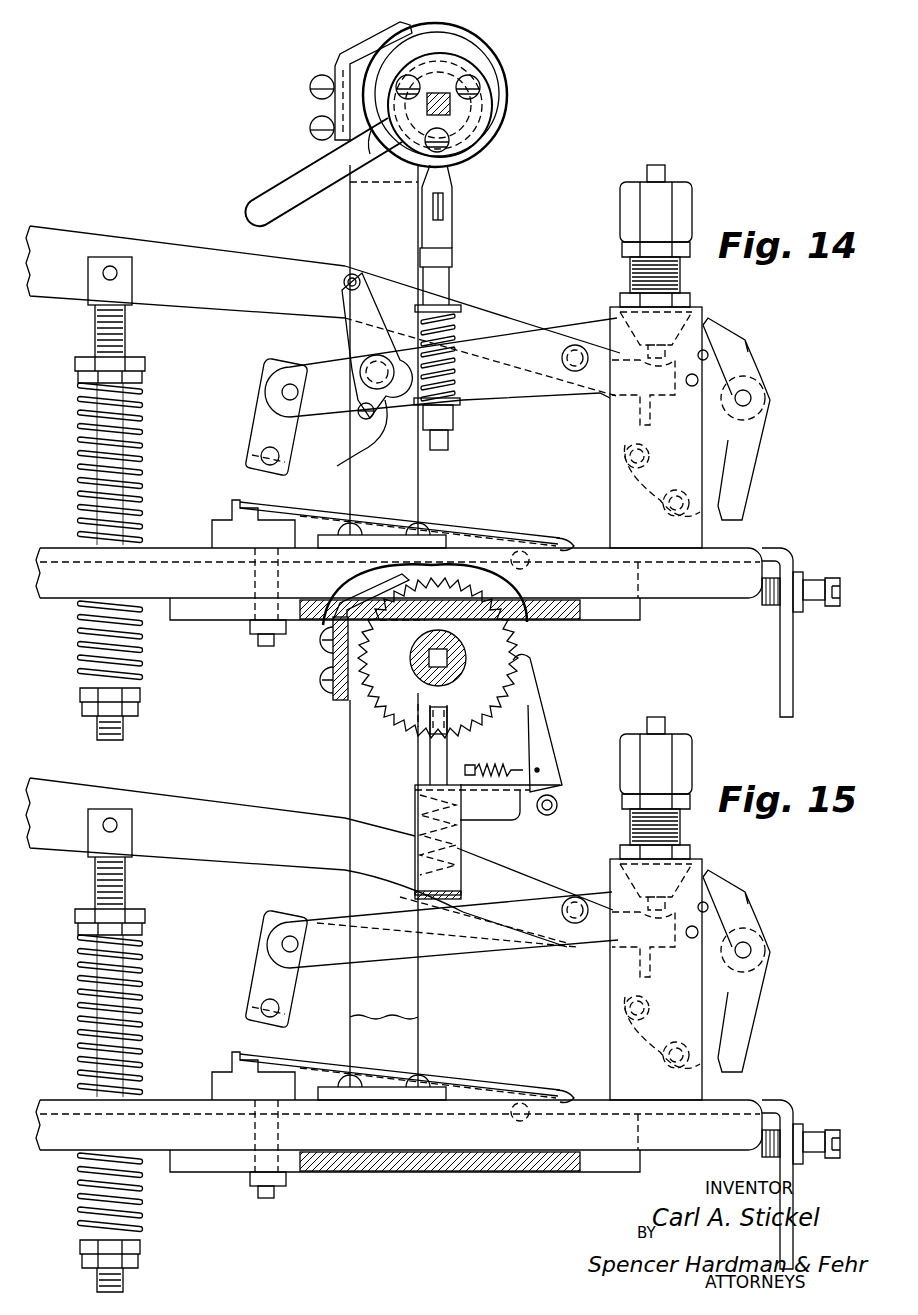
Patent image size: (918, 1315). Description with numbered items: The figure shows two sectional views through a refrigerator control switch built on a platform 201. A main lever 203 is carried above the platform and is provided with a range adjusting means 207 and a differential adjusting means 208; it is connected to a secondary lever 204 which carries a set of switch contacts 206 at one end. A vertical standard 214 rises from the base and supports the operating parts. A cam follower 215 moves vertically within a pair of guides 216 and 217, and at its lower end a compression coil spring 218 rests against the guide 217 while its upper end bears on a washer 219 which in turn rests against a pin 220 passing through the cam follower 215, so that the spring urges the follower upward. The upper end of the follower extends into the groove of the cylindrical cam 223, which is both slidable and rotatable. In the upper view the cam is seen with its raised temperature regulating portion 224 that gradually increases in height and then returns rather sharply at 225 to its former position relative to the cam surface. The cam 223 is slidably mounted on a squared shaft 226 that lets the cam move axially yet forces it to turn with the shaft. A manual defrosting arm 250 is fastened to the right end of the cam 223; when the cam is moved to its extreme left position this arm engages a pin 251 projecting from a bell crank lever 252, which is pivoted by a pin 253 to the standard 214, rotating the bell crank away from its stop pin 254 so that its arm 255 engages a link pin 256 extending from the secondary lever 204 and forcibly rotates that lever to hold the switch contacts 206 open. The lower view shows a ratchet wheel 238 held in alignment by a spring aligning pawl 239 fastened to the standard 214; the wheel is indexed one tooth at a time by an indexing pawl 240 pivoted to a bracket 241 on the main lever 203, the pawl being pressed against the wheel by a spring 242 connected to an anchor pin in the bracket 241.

In FIG. 14, the platform 201 is at (736, 550).
In FIG. 15, the platform 201 is at (438, 1167).
In FIG. 14, the main lever 203 is at (160, 240).
In FIG. 15, the main lever 203 is at (319, 855).
In FIG. 14, the secondary lever 204 is at (309, 378).
In FIG. 15, the secondary lever 204 is at (442, 920).
In FIG. 14, the switch contacts 206 is at (211, 533).
In FIG. 15, the switch contacts 206 is at (367, 1086).
In FIG. 15, the range adjusting means 207 is at (139, 1113).
In FIG. 14, the differential adjusting means 208 is at (690, 190).
In FIG. 15, the differential adjusting means 208 is at (690, 908).
In FIG. 14, the vertical standard 214 is at (418, 488).
In FIG. 15, the vertical standard 214 is at (352, 748).
In FIG. 14, the cam follower 215 is at (450, 232).
In FIG. 14, the guide 216 is at (452, 258).
In FIG. 14, the guide 217 is at (456, 424).
In FIG. 14, the compression coil spring 218 is at (460, 340).
In FIG. 14, the washer 219 is at (458, 316).
In FIG. 14, the pin 220 is at (454, 303).
In FIG. 14, the cylindrical cam 223 is at (492, 70).
In FIG. 14, the raised temperature regulating portion 224 is at (450, 36).
In FIG. 14, the return portion 225 is at (337, 100).
In FIG. 14, the squared shaft 226 is at (452, 105).
In FIG. 15, the ratchet wheel 238 is at (518, 652).
In FIG. 15, the spring aligning pawl 239 is at (330, 650).
In FIG. 15, the indexing pawl 240 is at (552, 703).
In FIG. 15, the bracket 241 is at (510, 818).
In FIG. 15, the spring 242 is at (487, 766).
In FIG. 14, the manual defrosting arm 250 is at (280, 185).
In FIG. 14, the pin 251 is at (346, 272).
In FIG. 14, the bell crank lever 252 is at (355, 332).
In FIG. 14, the pin 253 is at (349, 452).
In FIG. 14, the stop pin 254 is at (360, 415).
In FIG. 14, the arm 255 is at (262, 406).
In FIG. 15, the arm 255 is at (276, 969).
In FIG. 14, the link pin 256 is at (282, 392).
In FIG. 15, the link pin 256 is at (249, 935).